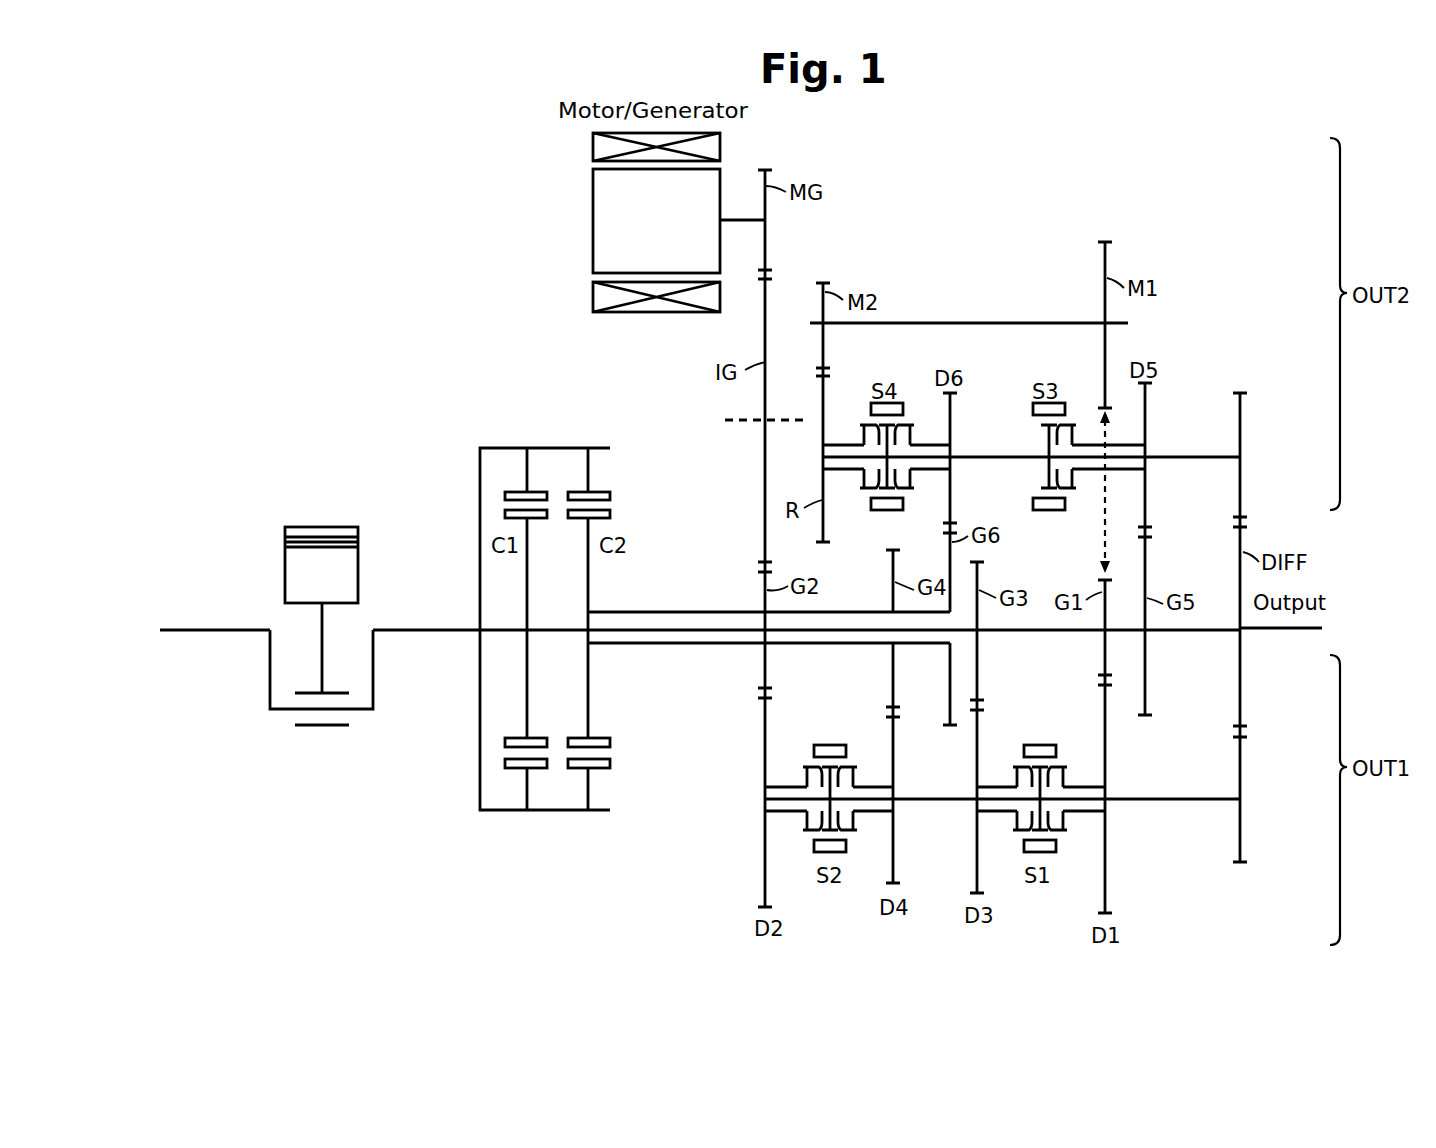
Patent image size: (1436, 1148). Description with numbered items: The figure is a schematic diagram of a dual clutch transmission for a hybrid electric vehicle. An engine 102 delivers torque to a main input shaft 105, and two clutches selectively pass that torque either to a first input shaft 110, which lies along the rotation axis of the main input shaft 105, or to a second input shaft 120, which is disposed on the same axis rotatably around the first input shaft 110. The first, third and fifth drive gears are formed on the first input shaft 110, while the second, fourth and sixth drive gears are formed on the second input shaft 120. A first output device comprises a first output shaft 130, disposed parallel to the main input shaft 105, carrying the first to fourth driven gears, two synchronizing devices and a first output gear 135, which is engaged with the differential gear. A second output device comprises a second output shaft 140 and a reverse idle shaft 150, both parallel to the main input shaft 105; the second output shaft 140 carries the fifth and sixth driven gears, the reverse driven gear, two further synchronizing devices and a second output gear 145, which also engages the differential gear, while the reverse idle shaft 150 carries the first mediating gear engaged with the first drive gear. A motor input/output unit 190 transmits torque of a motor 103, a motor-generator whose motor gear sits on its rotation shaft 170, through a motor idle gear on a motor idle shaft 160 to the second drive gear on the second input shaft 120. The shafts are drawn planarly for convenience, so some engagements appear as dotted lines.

The engine 102 is at (292, 509).
The motor 103 is at (593, 183).
The main input shaft 105 is at (436, 632).
The first input shaft 110 is at (672, 632).
The second input shaft 120 is at (722, 646).
The first output shaft 130 is at (1162, 801).
The first output gear 135 is at (1243, 765).
The second output shaft 140 is at (996, 441).
The second output gear 145 is at (1243, 421).
The reverse idle shaft 150 is at (990, 309).
The motor idle shaft 160 is at (736, 425).
The rotation shaft 170 is at (744, 207).
The motor input/output unit 190 is at (795, 235).